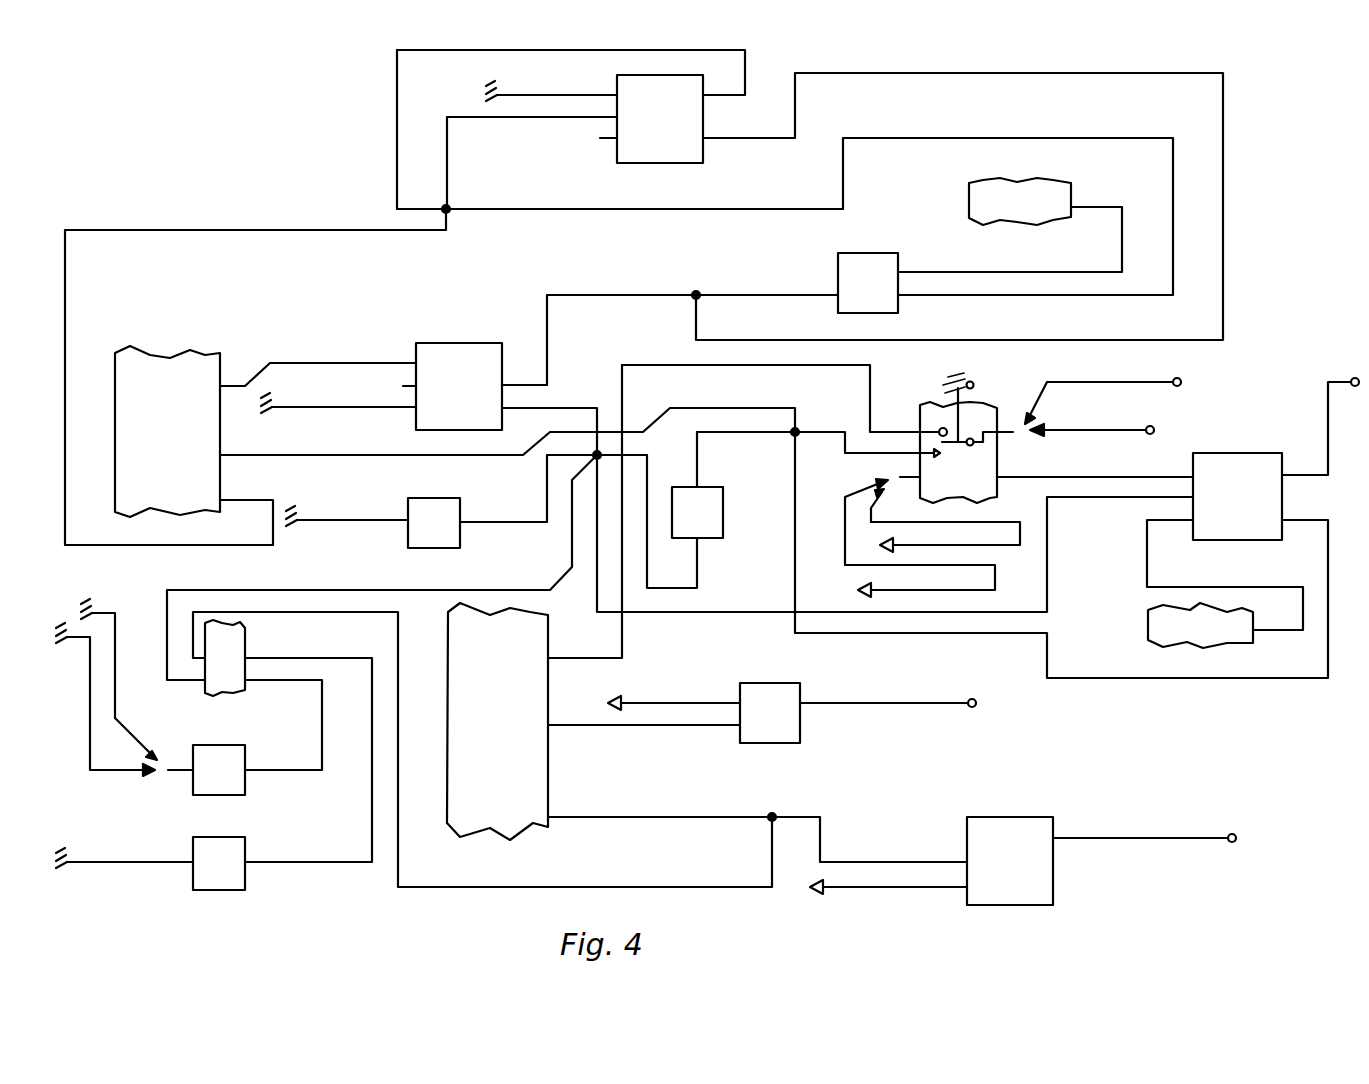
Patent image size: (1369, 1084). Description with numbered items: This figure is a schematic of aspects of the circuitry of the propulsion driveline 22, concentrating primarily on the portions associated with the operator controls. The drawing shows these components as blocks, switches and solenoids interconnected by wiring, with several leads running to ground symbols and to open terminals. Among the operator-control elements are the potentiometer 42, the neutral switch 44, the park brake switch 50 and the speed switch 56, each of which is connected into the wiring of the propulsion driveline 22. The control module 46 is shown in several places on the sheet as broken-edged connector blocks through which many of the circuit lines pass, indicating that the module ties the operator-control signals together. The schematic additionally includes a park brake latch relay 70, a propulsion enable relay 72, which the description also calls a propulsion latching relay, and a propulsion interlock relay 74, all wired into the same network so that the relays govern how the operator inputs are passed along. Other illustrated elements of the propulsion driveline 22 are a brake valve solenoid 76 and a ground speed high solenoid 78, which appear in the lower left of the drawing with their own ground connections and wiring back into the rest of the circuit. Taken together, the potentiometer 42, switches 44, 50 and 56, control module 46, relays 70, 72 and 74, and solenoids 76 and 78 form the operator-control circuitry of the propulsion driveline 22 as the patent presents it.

The propulsion driveline 22 is at (244, 173).
The potentiometer 42 is at (800, 688).
The neutral switch 44 is at (838, 267).
The control module 46 is at (198, 353).
The park brake switch 50 is at (974, 384).
The speed switch 56 is at (966, 832).
The park brake latch relay 70 is at (1230, 540).
The propulsion enable relay 72 is at (615, 152).
The propulsion interlock relay 74 is at (463, 343).
The brake valve solenoid 76 is at (235, 745).
The ground speed high solenoid 78 is at (245, 843).